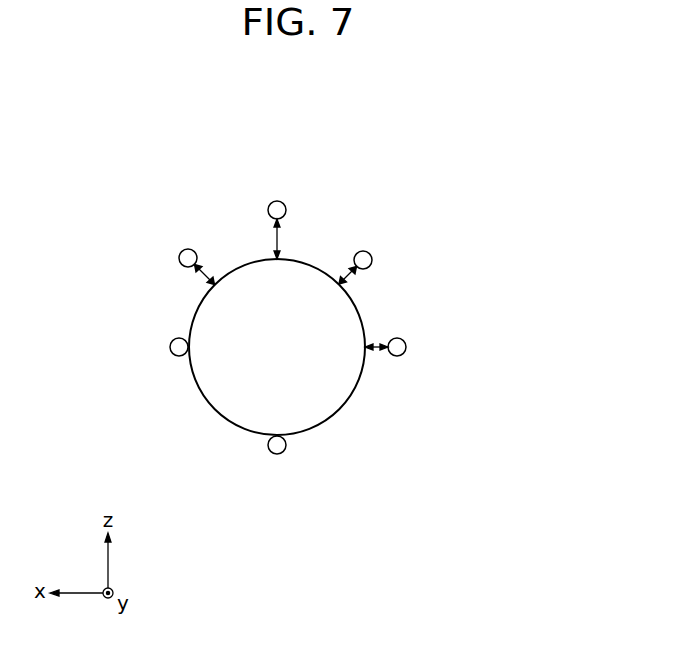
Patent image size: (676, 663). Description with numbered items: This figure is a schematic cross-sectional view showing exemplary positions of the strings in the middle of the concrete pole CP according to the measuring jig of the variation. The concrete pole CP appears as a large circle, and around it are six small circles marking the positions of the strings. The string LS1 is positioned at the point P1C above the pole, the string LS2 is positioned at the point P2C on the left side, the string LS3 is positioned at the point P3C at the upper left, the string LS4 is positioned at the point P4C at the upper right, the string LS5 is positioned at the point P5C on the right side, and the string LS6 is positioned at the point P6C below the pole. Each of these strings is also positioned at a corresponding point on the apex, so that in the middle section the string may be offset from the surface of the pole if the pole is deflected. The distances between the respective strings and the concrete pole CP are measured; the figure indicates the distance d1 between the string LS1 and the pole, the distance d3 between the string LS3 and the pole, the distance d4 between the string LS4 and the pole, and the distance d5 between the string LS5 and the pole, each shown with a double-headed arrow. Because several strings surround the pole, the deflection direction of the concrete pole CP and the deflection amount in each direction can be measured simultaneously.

The concrete pole CP is at (233, 398).
The point P1C is at (297, 150).
The string LS1 is at (278, 201).
The point P2C is at (119, 380).
The string LS2 is at (170, 350).
The point P3C is at (133, 223).
The string LS3 is at (180, 252).
The point P4C is at (434, 237).
The string LS4 is at (373, 262).
The point P5C is at (454, 372).
The string LS5 is at (407, 347).
The point P6C is at (305, 509).
The string LS6 is at (285, 452).
The distance d1 is at (283, 240).
The distance d3 is at (207, 273).
The distance d4 is at (349, 275).
The distance d5 is at (373, 350).